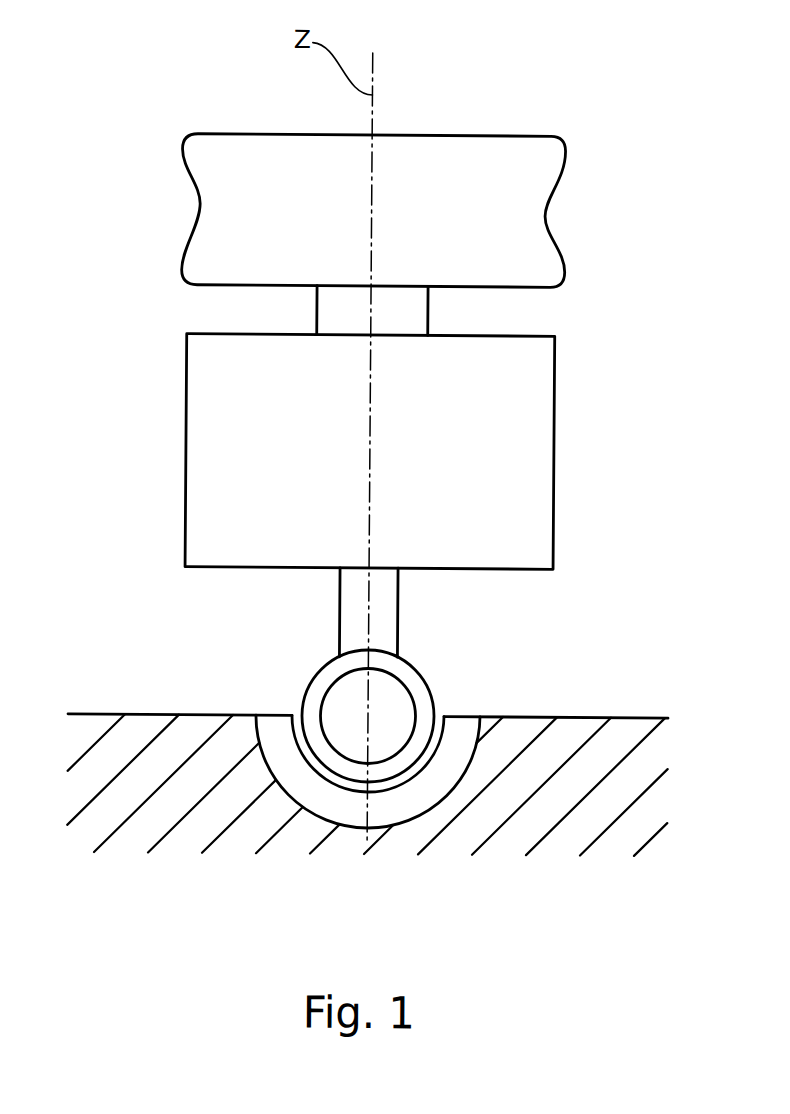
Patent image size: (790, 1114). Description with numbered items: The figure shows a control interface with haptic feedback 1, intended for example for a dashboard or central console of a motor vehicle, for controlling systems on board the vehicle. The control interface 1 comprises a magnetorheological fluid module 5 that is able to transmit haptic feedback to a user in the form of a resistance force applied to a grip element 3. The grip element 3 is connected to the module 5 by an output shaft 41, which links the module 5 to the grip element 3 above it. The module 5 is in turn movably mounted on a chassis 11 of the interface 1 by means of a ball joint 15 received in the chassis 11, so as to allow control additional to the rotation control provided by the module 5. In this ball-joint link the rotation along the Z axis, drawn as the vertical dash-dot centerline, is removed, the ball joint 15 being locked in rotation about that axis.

The control interface with haptic feedback 1 is at (175, 82).
The grip element 3 is at (511, 206).
The output shaft 41 is at (410, 312).
The magnetorheological fluid module 5 is at (535, 469).
The ball joint 15 is at (319, 610).
The chassis 11 is at (593, 749).